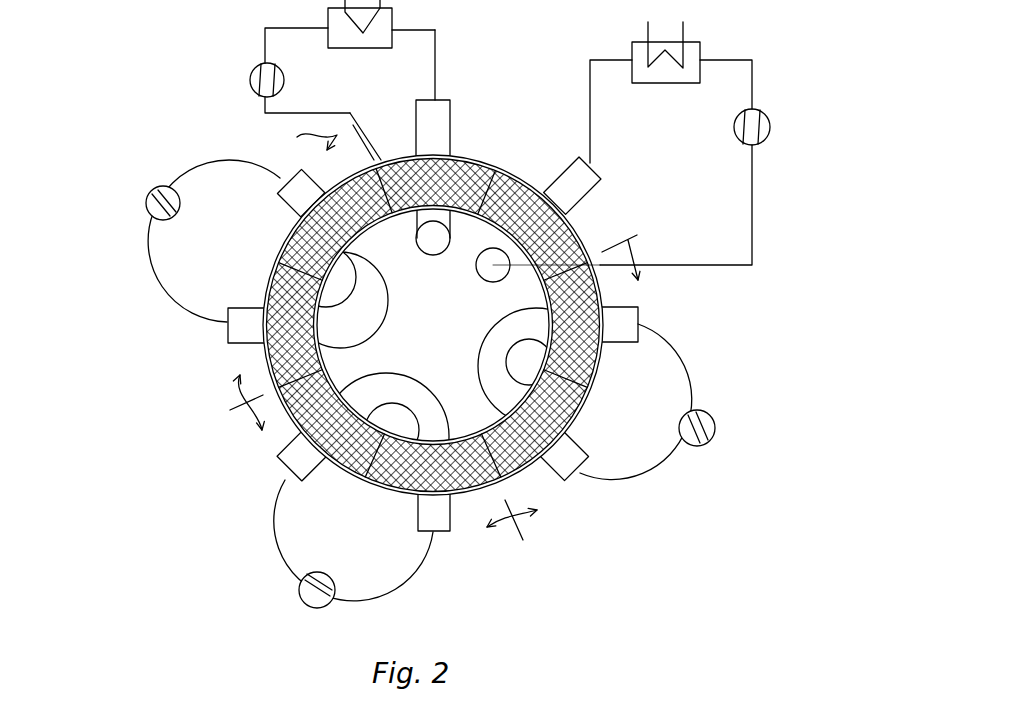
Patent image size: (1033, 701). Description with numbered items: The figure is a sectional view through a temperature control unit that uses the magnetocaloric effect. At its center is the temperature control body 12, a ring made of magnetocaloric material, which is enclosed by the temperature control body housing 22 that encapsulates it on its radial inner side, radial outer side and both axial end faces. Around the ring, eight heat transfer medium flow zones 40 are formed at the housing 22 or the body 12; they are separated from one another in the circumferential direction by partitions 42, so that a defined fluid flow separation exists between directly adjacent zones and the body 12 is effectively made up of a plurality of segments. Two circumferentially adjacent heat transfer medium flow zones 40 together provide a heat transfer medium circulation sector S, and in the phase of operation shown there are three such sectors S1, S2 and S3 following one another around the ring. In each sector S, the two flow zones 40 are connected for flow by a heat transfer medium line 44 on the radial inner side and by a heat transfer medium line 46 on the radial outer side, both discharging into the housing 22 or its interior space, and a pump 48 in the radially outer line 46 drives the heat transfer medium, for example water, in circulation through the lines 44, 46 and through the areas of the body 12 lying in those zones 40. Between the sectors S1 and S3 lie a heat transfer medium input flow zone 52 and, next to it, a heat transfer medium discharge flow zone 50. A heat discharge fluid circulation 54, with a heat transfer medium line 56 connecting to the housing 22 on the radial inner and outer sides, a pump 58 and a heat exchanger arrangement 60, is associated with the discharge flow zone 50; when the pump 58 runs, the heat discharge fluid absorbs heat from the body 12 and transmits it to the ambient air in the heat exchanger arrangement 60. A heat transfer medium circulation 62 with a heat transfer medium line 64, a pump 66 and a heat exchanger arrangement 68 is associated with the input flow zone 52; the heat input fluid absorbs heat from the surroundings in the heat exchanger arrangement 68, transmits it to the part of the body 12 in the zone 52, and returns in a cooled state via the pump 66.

The temperature control body 12 is at (517, 452).
The temperature control body housing 22 is at (470, 500).
The heat transfer medium flow zone 40 is at (250, 357).
The partition 42 is at (375, 467).
The heat transfer medium line 44 is at (388, 295).
The heat transfer medium line 46 is at (227, 328).
The pump 48 is at (147, 197).
The heat transfer medium discharge flow zone 50 is at (461, 150).
The heat transfer medium input flow zone 52 is at (529, 172).
The heat discharge fluid circulation 54 is at (304, 80).
The heat transfer medium line 56 is at (435, 58).
The pump 58 is at (248, 88).
The heat exchanger arrangement 60 is at (392, 13).
The heat transfer medium circulation 62 is at (658, 182).
The heat transfer medium line 64 is at (750, 205).
The pump 66 is at (767, 120).
The heat exchanger arrangement 68 is at (700, 48).
The heat transfer medium circulation sector S is at (642, 533).
The first heat transfer medium circulation sector S1 is at (297, 142).
The second heat transfer medium circulation sector S2 is at (230, 433).
The third heat transfer medium circulation sector S3 is at (633, 257).